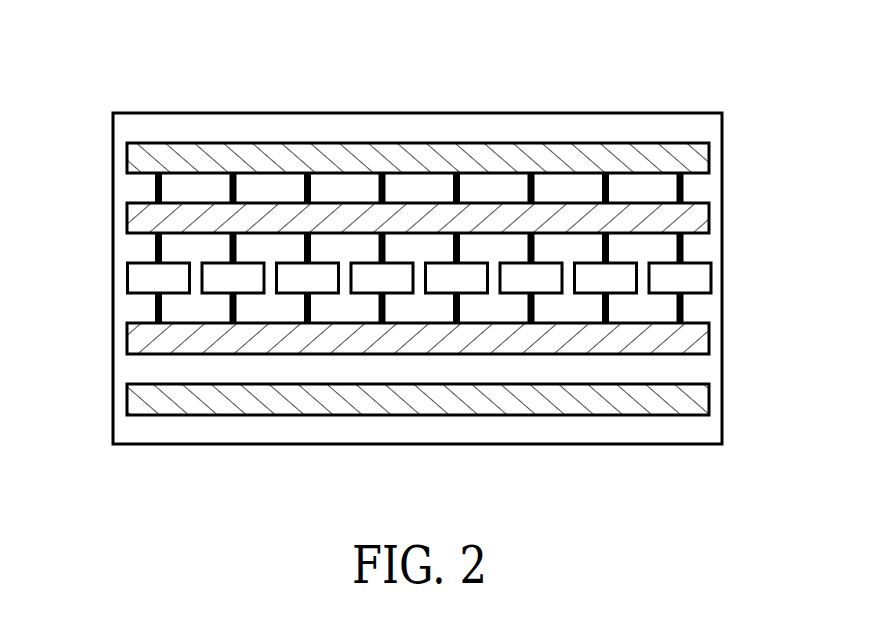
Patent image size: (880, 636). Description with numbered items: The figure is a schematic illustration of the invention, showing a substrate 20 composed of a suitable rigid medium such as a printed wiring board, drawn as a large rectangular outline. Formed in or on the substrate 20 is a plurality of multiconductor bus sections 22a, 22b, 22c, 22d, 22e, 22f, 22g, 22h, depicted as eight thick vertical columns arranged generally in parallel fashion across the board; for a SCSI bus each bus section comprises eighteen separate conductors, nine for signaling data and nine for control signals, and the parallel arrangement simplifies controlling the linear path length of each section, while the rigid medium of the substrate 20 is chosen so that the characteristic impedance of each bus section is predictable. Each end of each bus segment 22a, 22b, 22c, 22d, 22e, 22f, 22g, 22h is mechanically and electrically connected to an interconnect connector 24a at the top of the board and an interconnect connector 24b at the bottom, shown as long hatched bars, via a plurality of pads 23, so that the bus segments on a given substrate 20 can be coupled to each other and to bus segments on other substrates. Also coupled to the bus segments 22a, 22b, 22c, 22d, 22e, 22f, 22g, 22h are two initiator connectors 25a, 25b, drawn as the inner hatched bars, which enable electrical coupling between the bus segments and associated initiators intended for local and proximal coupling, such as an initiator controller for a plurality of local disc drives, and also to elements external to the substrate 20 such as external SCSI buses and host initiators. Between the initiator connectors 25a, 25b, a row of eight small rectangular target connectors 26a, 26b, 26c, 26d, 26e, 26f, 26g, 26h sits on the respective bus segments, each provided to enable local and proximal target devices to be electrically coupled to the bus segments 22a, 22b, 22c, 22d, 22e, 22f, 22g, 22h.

The substrate 20 is at (712, 192).
The pads 23 is at (160, 174).
The interconnect connector 24a is at (127, 160).
The interconnect connector 24b is at (127, 390).
The initiator connector 25a is at (127, 222).
The initiator connector 25b is at (127, 325).
The bus section 22a is at (155, 186).
The bus section 22b is at (229, 185).
The bus section 22c is at (304, 185).
The bus section 22d is at (378, 185).
The bus section 22e is at (452, 185).
The bus section 22f is at (527, 185).
The bus section 22g is at (601, 185).
The bus section 22h is at (676, 185).
The target connector 26a is at (127, 278).
The target connector 26b is at (215, 297).
The target connector 26c is at (293, 297).
The target connector 26d is at (367, 297).
The target connector 26e is at (442, 297).
The target connector 26f is at (517, 297).
The target connector 26g is at (590, 297).
The target connector 26h is at (705, 295).